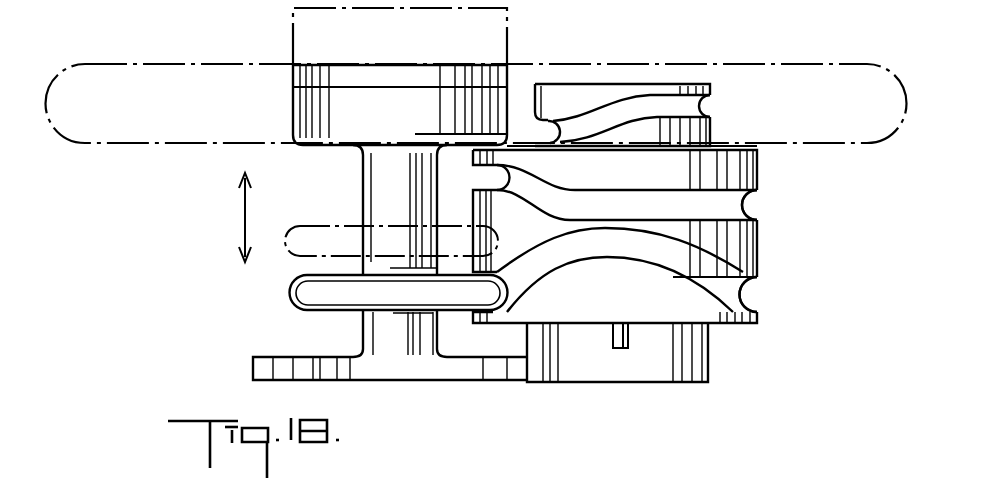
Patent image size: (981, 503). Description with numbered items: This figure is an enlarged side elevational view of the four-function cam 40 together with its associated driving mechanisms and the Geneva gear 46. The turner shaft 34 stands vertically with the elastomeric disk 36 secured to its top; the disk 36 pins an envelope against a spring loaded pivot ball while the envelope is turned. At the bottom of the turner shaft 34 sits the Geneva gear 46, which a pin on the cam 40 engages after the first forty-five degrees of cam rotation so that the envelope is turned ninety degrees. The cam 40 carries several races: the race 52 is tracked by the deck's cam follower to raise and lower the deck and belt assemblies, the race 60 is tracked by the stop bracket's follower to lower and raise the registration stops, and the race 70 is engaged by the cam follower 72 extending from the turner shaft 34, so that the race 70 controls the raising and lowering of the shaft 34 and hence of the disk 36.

The turner shaft 34 is at (372, 197).
The elastomeric disk 36 is at (293, 76).
The four-function cam 40 is at (758, 247).
The Geneva gear 46 is at (478, 383).
The race 52 is at (705, 98).
The race 60 is at (747, 191).
The race 70 is at (747, 281).
The cam follower 72 is at (312, 304).